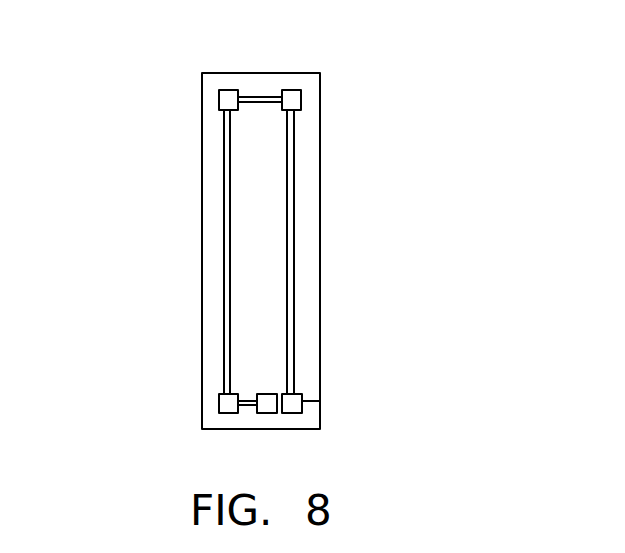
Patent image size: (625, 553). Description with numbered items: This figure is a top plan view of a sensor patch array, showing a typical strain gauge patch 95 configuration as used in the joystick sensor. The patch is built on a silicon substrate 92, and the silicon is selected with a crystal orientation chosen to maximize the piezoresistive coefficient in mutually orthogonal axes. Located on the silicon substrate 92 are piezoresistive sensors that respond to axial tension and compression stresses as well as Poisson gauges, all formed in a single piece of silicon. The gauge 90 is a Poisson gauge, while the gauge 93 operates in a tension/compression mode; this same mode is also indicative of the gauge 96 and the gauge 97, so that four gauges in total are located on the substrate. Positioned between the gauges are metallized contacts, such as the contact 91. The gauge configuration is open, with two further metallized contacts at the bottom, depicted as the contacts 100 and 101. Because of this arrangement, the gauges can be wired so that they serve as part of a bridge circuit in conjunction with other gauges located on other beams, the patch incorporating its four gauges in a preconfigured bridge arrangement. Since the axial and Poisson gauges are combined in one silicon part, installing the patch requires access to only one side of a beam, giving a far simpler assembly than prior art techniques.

The Poisson gauge 90 is at (262, 97).
The metallized contact 91 is at (219, 95).
The silicon substrate 92 is at (202, 298).
The gauge 93 is at (290, 260).
The strain gauge patch 95 is at (320, 130).
The gauge 96 is at (228, 205).
The gauge 97 is at (250, 405).
The metallized contact 100 is at (267, 413).
The metallized contact 101 is at (320, 401).